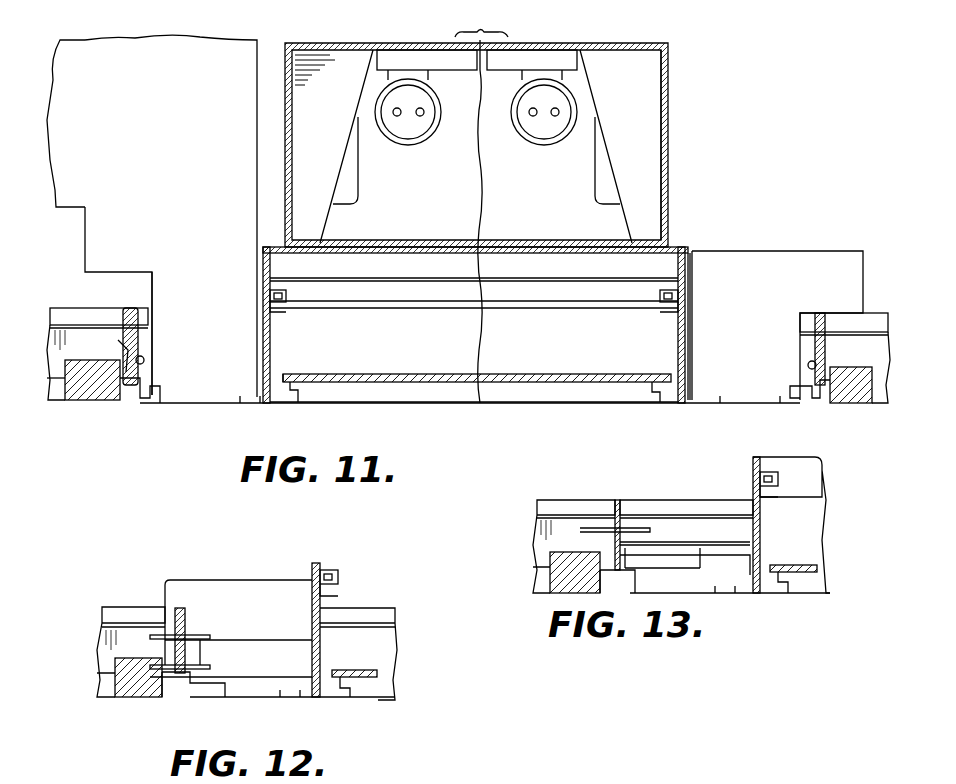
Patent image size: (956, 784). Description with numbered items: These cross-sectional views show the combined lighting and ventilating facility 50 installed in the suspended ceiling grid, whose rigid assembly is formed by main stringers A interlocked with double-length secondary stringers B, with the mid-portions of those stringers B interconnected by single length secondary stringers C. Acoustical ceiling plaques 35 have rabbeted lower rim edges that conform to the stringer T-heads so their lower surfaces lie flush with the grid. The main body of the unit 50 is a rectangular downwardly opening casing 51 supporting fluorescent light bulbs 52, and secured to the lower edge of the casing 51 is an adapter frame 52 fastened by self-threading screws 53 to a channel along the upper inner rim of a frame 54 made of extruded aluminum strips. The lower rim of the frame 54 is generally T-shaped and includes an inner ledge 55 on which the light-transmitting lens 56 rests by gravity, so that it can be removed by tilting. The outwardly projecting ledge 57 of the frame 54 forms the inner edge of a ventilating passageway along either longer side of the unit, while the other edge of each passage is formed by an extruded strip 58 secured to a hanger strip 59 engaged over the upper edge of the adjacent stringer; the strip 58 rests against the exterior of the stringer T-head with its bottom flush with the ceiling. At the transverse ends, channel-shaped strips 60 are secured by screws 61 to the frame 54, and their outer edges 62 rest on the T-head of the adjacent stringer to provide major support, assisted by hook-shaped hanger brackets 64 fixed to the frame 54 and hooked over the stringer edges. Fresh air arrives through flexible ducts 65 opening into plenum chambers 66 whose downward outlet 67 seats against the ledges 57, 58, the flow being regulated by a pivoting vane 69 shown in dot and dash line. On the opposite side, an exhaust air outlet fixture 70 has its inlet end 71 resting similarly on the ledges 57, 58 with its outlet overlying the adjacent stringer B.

In FIG. 11, the ceiling plaques 35 is at (75, 395).
In FIG. 12, the ceiling plaques 35 is at (128, 688).
In FIG. 13, the ceiling plaques 35 is at (575, 572).
In FIG. 11, the combined lighting and ventilating facility 50 is at (697, 106).
In FIG. 11, the casing 51 is at (670, 188).
In FIG. 11, the fluorescent light bulbs 52 is at (425, 142).
In FIG. 13, the fluorescent light bulbs 52 is at (758, 462).
In FIG. 11, the self-threading screws 53 is at (288, 294).
In FIG. 12, the self-threading screws 53 is at (340, 588).
In FIG. 13, the self-threading screws 53 is at (782, 484).
In FIG. 11, the frame 54 is at (272, 352).
In FIG. 12, the frame 54 is at (322, 653).
In FIG. 13, the frame 54 is at (762, 528).
In FIG. 11, the inner ledge 55 is at (300, 394).
In FIG. 12, the inner ledge 55 is at (352, 690).
In FIG. 13, the inner ledge 55 is at (790, 588).
In FIG. 11, the light-transmitting lens 56 is at (376, 374).
In FIG. 12, the light-transmitting lens 56 is at (368, 670).
In FIG. 13, the light-transmitting lens 56 is at (806, 565).
In FIG. 11, the outwardly projecting ledge 57 is at (262, 403).
In FIG. 12, the outwardly projecting ledge 57 is at (300, 697).
In FIG. 13, the outwardly projecting ledge 57 is at (736, 593).
In FIG. 11, the extruded strips 58 is at (158, 404).
In FIG. 12, the extruded strips 58 is at (214, 697).
In FIG. 13, the extruded strips 58 is at (617, 581).
In FIG. 11, the hanger strips 59 is at (136, 342).
In FIG. 12, the hanger strips 59 is at (180, 640).
In FIG. 13, the channel-shaped strips 60 is at (712, 561).
In FIG. 13, the screws 61 is at (665, 550).
In FIG. 13, the outer edges 62 is at (654, 561).
In FIG. 12, the hook-shaped hanger brackets 64 is at (240, 580).
In FIG. 11, the flexible ducts 65 is at (70, 58).
In FIG. 11, the plenum chambers 66 is at (194, 48).
In FIG. 11, the outlet 67 is at (152, 292).
In FIG. 11, the pivoting vane 69 is at (195, 405).
In FIG. 11, the exhaust air outlet fixture 70 is at (745, 256).
In FIG. 11, the inlet end 71 is at (690, 362).
In FIG. 13, the main stringers A is at (620, 500).
In FIG. 11, the secondary stringers B is at (110, 408).
In FIG. 12, the secondary stringers B is at (163, 697).
In FIG. 13, the secondary stringers B is at (570, 500).
In FIG. 11, the single length secondary stringers C is at (890, 300).
In FIG. 12, the single length secondary stringers C is at (133, 607).